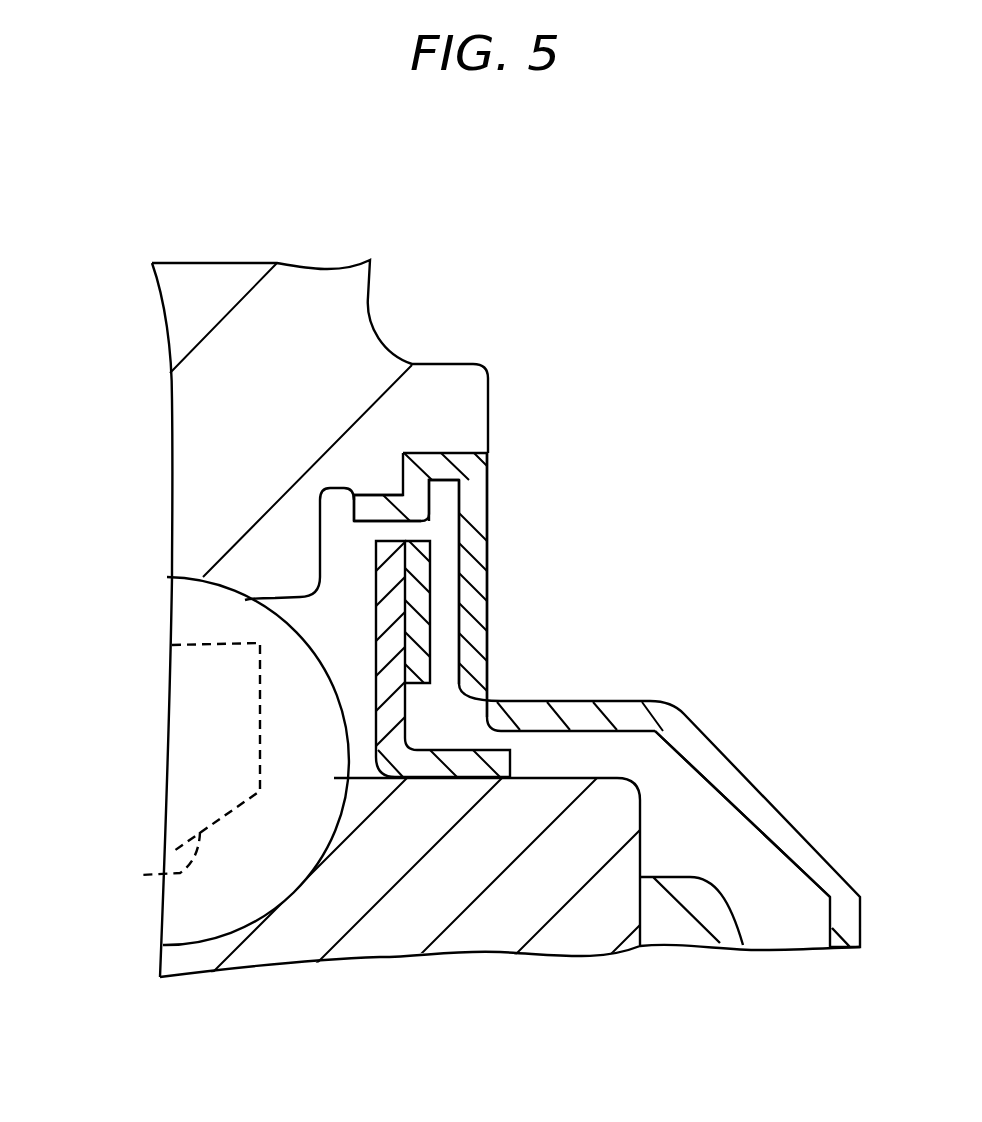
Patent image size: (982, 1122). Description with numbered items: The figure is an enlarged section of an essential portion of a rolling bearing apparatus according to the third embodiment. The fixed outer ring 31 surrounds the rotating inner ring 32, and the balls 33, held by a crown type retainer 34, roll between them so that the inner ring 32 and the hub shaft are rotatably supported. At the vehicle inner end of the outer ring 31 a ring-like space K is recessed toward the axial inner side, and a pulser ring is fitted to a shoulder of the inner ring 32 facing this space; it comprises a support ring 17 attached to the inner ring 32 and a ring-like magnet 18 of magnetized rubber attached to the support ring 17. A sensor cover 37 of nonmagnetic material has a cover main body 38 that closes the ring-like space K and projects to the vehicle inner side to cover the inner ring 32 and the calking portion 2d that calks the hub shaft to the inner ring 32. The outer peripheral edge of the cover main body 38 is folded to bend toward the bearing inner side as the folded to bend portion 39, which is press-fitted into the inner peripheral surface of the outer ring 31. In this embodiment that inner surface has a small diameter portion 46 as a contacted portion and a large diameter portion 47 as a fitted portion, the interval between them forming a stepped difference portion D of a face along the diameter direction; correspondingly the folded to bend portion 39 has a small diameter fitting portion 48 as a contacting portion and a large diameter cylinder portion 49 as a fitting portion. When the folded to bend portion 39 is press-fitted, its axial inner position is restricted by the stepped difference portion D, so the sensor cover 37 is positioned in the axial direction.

The outer ring 31 is at (363, 299).
The stepped difference portion D is at (418, 452).
The large diameter portion 47 is at (490, 456).
The large diameter cylinder portion 49 is at (470, 488).
The folded to bend portion 39 is at (452, 528).
The small diameter portion 46 is at (383, 512).
The small diameter fitting portion 48 is at (378, 521).
The balls 33 is at (185, 618).
The ring-like space K is at (338, 700).
The crown type retainer 34 is at (140, 876).
The inner ring 32 is at (361, 943).
The support ring 17 is at (422, 765).
The ring-like magnet 18 is at (415, 675).
The sensor cover 37 is at (765, 760).
The cover main body 38 is at (811, 843).
The calking portion 2d is at (708, 912).